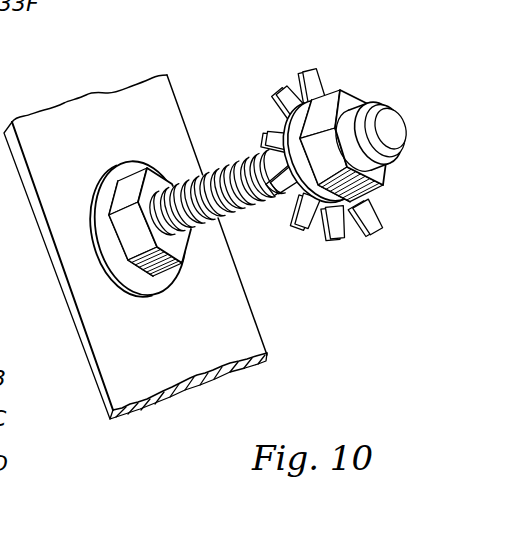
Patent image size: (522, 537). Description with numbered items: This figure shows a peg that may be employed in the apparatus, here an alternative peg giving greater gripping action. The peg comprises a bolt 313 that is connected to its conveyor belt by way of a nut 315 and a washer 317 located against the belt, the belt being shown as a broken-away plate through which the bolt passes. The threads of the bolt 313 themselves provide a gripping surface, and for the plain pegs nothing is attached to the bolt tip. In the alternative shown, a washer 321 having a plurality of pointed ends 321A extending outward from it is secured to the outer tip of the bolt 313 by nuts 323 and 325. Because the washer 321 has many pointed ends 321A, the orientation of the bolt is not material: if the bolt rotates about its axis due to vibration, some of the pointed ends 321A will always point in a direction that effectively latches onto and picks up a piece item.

The bolt 313 is at (229, 163).
The nut 315 is at (140, 180).
The washer 317 is at (97, 170).
The washer 321 is at (317, 77).
The pointed ends 321A is at (370, 234).
The nut 323 is at (386, 168).
The nut 325 is at (280, 212).